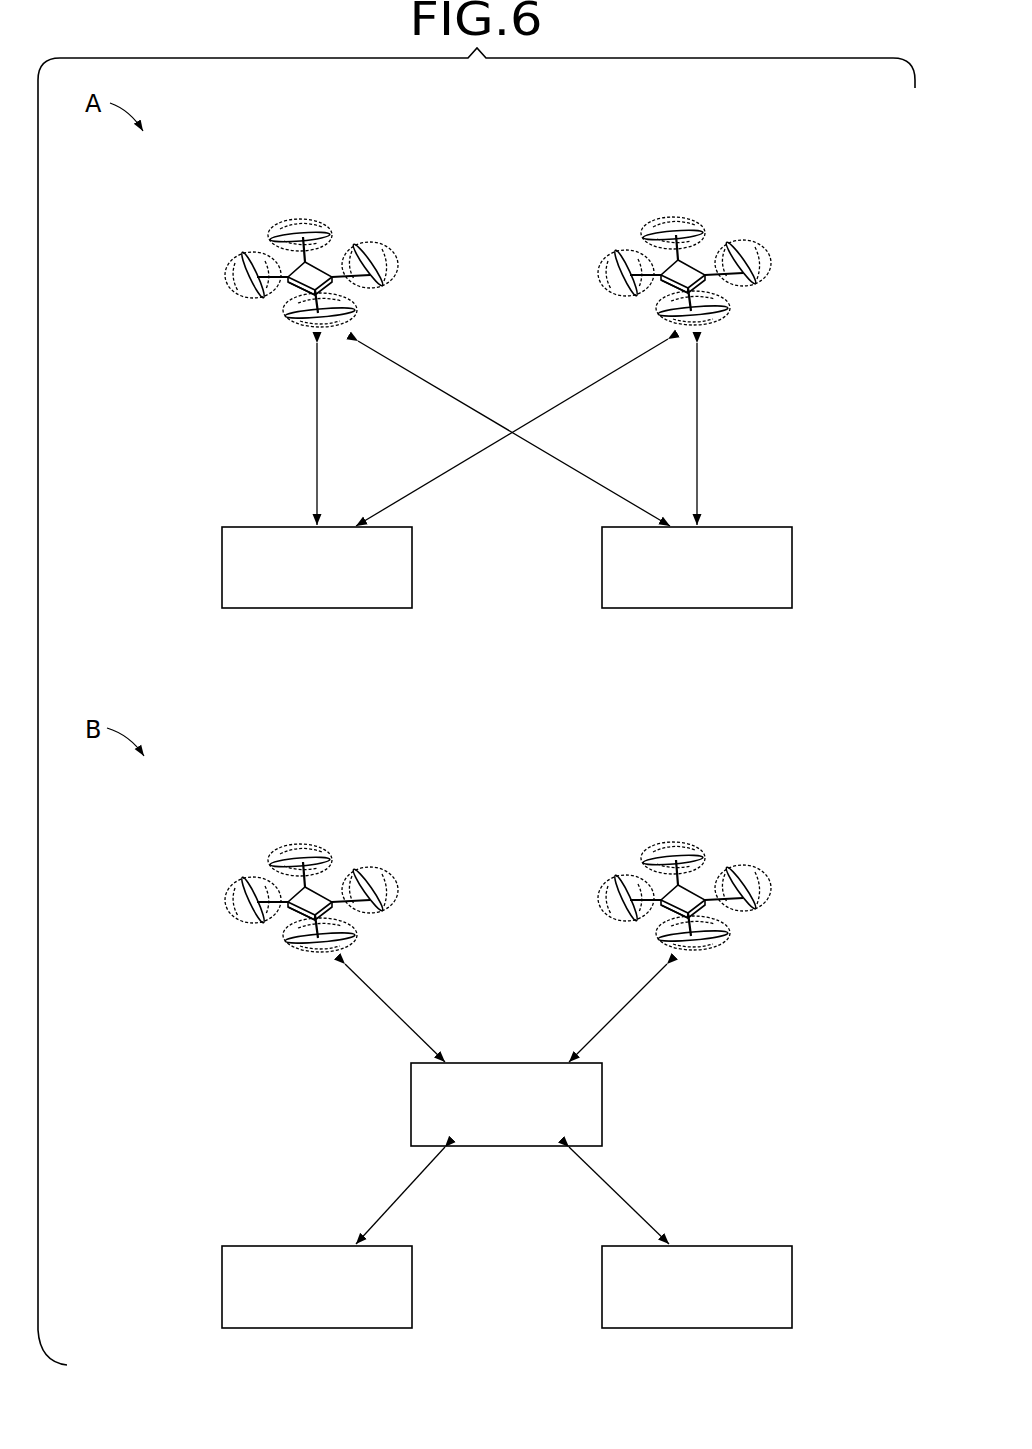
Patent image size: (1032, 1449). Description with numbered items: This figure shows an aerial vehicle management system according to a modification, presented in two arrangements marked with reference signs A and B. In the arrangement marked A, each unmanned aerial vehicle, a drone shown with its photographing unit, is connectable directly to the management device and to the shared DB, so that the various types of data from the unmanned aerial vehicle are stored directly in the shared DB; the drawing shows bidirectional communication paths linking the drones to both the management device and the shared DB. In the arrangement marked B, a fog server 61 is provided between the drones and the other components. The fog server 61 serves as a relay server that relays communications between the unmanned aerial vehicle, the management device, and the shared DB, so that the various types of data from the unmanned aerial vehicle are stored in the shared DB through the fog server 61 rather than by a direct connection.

The fog server 61 is at (597, 1060).